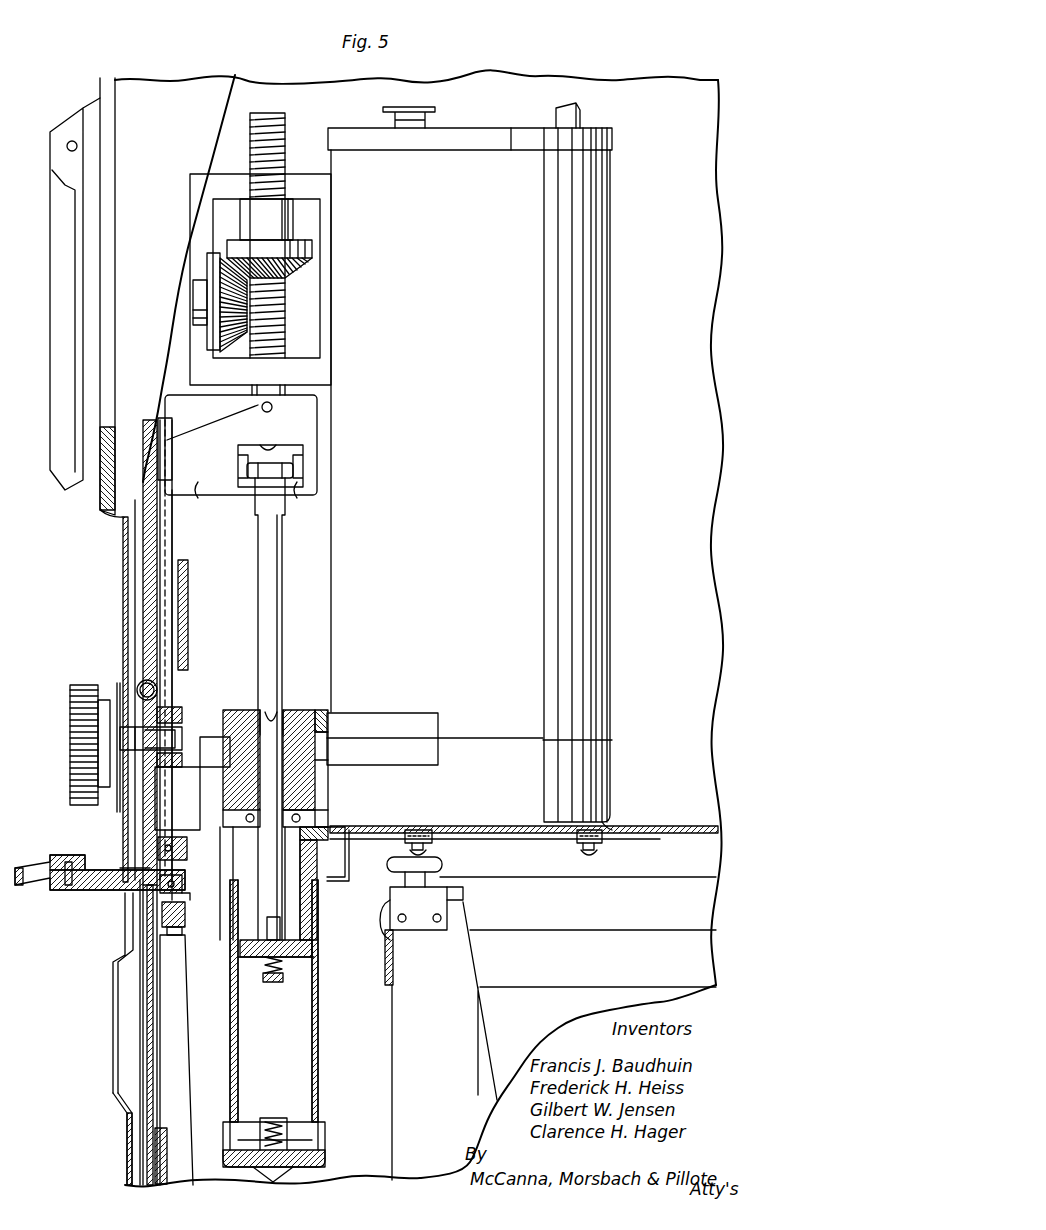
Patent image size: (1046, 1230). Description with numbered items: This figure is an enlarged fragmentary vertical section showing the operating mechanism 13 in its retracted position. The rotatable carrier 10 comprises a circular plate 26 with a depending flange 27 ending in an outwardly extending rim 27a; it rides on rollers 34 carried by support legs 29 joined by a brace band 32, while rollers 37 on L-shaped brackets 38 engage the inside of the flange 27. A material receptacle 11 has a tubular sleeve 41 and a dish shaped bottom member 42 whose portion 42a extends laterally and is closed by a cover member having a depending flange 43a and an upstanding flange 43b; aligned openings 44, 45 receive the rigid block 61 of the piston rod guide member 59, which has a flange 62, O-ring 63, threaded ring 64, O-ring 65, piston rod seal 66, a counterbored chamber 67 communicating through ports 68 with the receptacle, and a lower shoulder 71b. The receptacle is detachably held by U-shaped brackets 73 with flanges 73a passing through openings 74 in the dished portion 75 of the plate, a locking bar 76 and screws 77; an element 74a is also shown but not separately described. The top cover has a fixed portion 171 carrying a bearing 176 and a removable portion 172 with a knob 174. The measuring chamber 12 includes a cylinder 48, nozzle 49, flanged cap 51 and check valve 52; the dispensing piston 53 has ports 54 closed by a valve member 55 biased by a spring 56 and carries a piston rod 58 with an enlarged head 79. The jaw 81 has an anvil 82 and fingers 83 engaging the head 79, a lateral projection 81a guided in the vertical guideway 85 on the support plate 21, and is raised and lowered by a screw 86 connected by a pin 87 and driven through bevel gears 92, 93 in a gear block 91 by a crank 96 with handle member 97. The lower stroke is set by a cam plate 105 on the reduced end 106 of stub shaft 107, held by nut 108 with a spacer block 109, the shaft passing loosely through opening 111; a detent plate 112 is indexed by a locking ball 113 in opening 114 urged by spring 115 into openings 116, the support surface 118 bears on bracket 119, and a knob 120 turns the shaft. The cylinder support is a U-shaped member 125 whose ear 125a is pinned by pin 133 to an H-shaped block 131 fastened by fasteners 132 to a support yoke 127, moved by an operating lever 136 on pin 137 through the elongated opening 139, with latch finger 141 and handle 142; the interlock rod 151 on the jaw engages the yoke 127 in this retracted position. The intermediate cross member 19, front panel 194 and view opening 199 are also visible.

The rotatable carrier 10 is at (690, 822).
The material receptacle 11 is at (500, 452).
The measuring chamber 12 is at (290, 1031).
The operating mechanism 13 is at (269, 458).
The intermediate cross member 19 is at (150, 1150).
The support plate 21 is at (160, 467).
The circular plate 26 is at (690, 840).
The depending flange 27 is at (350, 862).
The outwardly extending rim 27a is at (332, 881).
The support legs 29 is at (478, 1020).
The brace band 32 is at (475, 958).
The rollers 34 is at (392, 905).
The rollers 37 is at (442, 865).
The L-shaped brackets 38 is at (462, 893).
The tubular sleeve 41 is at (598, 572).
The dish shaped bottom member 42 is at (605, 760).
The portion 42a is at (243, 805).
The depending flange 43a is at (222, 712).
The upstanding flange 43b is at (405, 714).
The opening 44 is at (297, 883).
The opening 45 is at (330, 745).
The cylinder 48 is at (320, 1032).
The nozzle 49 is at (282, 1168).
The flanged cap 51 is at (325, 1140).
The check valve 52 is at (275, 1118).
The dispensing piston 53 is at (243, 940).
The ports 54 is at (293, 940).
The valve member 55 is at (247, 965).
The spring 56 is at (284, 972).
The piston rod 58 is at (272, 578).
The piston rod guide member 59 is at (330, 704).
The rigid block 61 is at (320, 772).
The flange 62 is at (322, 826).
The O-ring 63 is at (322, 815).
The threaded ring 64 is at (318, 720).
The O-ring 65 is at (318, 728).
The piston rod seal 66 is at (290, 710).
The chamber 67 is at (250, 883).
The ports 68 is at (318, 808).
The lower shoulder 71b is at (308, 866).
The U-shaped brackets 73 is at (585, 830).
The outwardly extending flanges 73a is at (606, 822).
The openings 74 is at (413, 828).
The clamp 74a is at (316, 848).
The dished portion 75 is at (445, 826).
The locking bar 76 is at (640, 840).
The screws 77 is at (595, 852).
The enlarged head 79 is at (292, 470).
The jaw 81 is at (320, 412).
The lateral projection 81a is at (198, 488).
The anvil 82 is at (280, 455).
The fingers 83 is at (297, 490).
The vertical guideway 85 is at (172, 425).
The screw 86 is at (282, 325).
The pin 87 is at (262, 407).
The gear block 91 is at (320, 363).
The bevel gear 92 is at (315, 250).
The bevel gear 93 is at (212, 262).
The crank 96 is at (92, 128).
The handle member 97 is at (62, 258).
The cam plate 105 is at (185, 580).
The reduced end 106 is at (200, 707).
The stub shaft 107 is at (145, 742).
The nut 108 is at (190, 750).
The spacer block 109 is at (177, 798).
The opening 111 is at (158, 738).
The detent plate 112 is at (144, 698).
The locking ball 113 is at (154, 692).
The opening 114 is at (142, 686).
The spring 115 is at (157, 688).
The openings 116 is at (140, 692).
The circular support surface 118 is at (192, 806).
The bracket 119 is at (150, 830).
The knob 120 is at (75, 705).
The U-shaped member 125 is at (182, 878).
The ear 125a is at (185, 893).
The support yoke 127 is at (185, 1010).
The H-shaped block 131 is at (150, 868).
The fasteners 132 is at (182, 935).
The pin 133 is at (168, 845).
The operating lever 136 is at (88, 890).
The pin 137 is at (185, 910).
The vertically elongated opening 139 is at (125, 865).
The latch finger 141 is at (126, 910).
The handle 142 is at (30, 865).
The rod 151 is at (172, 530).
The fixed portion 171 is at (612, 135).
The removable portion 172 is at (478, 128).
The knob 174 is at (410, 112).
The bearing 176 is at (578, 110).
The front panel 194 is at (124, 540).
The view opening 199 is at (148, 1048).